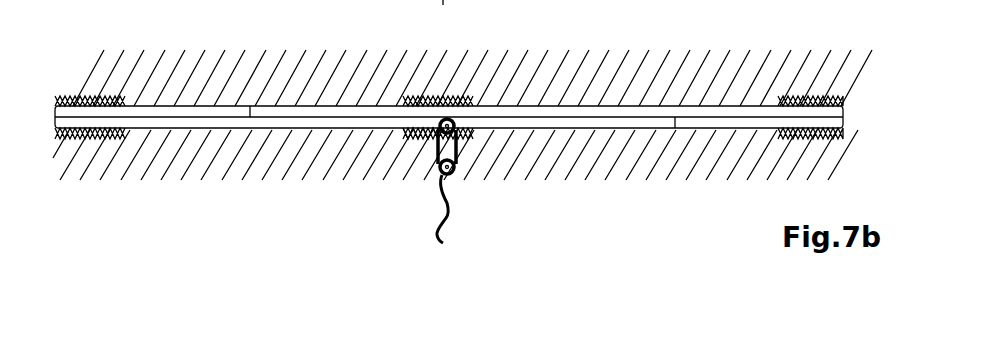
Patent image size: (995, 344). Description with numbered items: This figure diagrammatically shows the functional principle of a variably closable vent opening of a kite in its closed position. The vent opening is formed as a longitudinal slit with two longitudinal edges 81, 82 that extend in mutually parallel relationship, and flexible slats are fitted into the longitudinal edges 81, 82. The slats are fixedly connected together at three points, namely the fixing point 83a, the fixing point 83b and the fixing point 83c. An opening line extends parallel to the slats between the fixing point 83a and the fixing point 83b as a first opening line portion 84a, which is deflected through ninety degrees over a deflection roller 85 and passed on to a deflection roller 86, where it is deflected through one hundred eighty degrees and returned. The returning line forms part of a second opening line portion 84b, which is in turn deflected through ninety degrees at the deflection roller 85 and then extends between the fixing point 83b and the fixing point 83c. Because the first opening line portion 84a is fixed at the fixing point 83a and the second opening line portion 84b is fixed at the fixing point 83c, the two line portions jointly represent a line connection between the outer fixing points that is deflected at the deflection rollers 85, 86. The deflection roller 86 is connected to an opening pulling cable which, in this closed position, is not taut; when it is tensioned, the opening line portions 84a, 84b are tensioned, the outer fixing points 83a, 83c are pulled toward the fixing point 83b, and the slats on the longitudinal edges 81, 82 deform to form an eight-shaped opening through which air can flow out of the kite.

The longitudinal edge 81 is at (556, 130).
The longitudinal edge 82 is at (618, 103).
The fixing point 83a is at (108, 100).
The fixing point 83b is at (455, 96).
The fixing point 83c is at (813, 92).
The first opening line portion 84a is at (249, 107).
The second opening line portion 84b is at (675, 128).
The deflection roller 85 is at (418, 140).
The deflection roller 86 is at (438, 175).